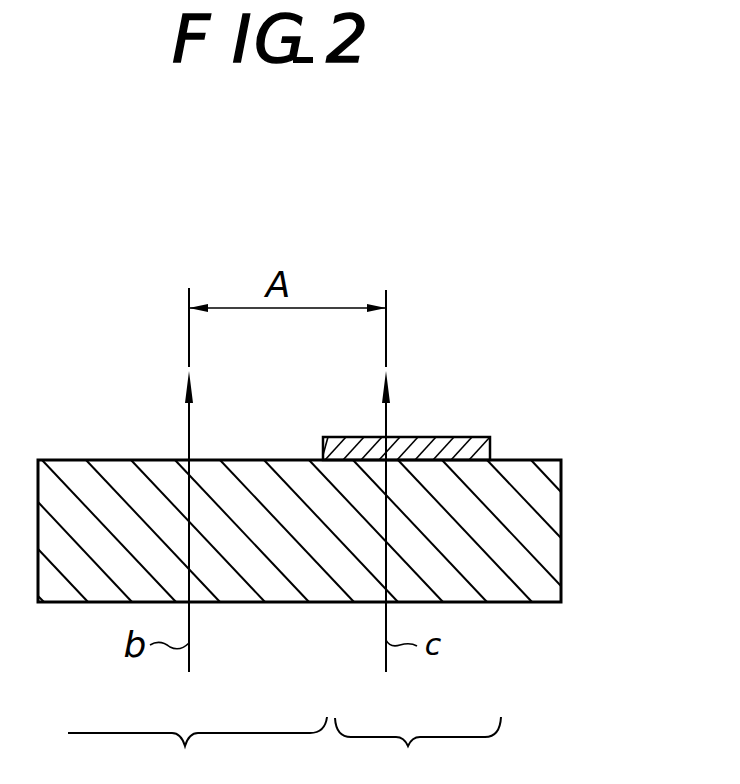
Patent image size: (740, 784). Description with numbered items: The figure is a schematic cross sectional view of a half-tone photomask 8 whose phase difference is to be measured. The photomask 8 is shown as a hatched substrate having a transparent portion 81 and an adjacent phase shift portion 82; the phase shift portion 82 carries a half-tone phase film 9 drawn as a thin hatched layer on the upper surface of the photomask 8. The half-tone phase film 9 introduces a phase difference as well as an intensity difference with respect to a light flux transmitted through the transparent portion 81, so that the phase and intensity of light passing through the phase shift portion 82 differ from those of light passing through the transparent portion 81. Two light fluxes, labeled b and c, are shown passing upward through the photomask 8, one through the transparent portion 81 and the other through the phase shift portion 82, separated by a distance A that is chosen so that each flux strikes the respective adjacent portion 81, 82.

The half-tone photomask 8 is at (580, 498).
The half-tone phase film 9 is at (477, 437).
The transparent portion 81 is at (197, 750).
The phase shift portion 82 is at (418, 750).